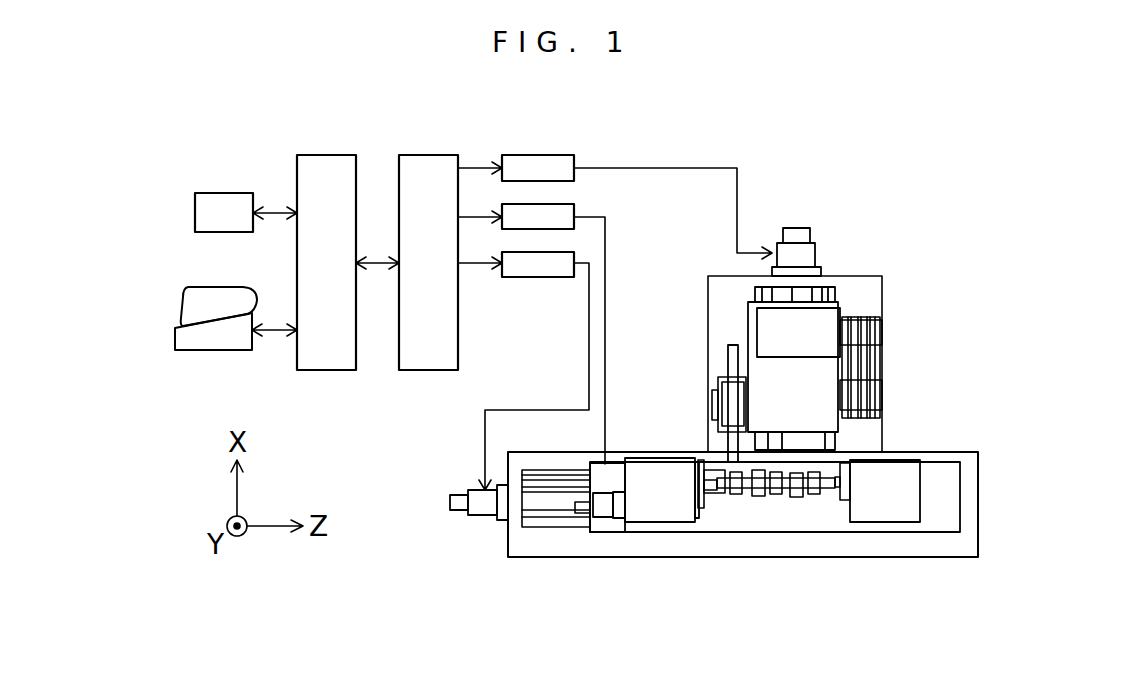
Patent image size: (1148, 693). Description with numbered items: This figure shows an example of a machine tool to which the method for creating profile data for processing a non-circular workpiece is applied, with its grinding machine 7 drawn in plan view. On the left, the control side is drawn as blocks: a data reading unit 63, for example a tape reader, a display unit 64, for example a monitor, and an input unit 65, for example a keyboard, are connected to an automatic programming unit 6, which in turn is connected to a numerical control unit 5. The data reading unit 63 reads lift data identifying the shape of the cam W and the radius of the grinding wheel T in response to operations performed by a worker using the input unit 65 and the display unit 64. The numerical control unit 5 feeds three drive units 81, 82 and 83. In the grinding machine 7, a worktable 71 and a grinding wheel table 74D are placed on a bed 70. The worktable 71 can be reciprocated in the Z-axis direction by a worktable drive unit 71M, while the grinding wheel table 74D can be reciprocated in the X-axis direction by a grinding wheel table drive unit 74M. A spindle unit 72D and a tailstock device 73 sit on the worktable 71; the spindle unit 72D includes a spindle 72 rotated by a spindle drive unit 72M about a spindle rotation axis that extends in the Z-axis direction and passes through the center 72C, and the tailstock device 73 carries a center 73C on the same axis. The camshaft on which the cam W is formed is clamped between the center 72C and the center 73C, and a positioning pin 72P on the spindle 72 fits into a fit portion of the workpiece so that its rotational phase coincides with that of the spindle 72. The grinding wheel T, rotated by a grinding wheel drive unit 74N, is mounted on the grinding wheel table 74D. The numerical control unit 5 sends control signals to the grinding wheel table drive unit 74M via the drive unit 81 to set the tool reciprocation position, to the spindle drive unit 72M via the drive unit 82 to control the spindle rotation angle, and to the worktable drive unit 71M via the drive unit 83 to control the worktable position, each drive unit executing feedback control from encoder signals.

The numerical control unit 5 is at (432, 155).
The automatic programming unit 6 is at (329, 155).
The grinding machine 7 is at (691, 288).
The data reading unit 63 is at (237, 193).
The display unit 64 is at (236, 287).
The input unit 65 is at (239, 351).
The bed 70 is at (965, 452).
The worktable 71 is at (945, 533).
The worktable drive unit 71M is at (488, 516).
The spindle 72 is at (705, 522).
The center 72C is at (705, 500).
The spindle unit 72D is at (660, 523).
The spindle drive unit 72M is at (605, 533).
The positioning pin 72P is at (705, 458).
The tailstock device 73 is at (895, 523).
The center 73C is at (840, 492).
The grinding wheel table 74D is at (838, 430).
The grinding wheel table drive unit 74M is at (815, 255).
The grinding wheel drive unit 74N is at (843, 318).
The drive unit 81 is at (556, 155).
The drive unit 82 is at (575, 207).
The drive unit 83 is at (563, 277).
The grinding wheel T is at (728, 440).
The cam W is at (805, 497).